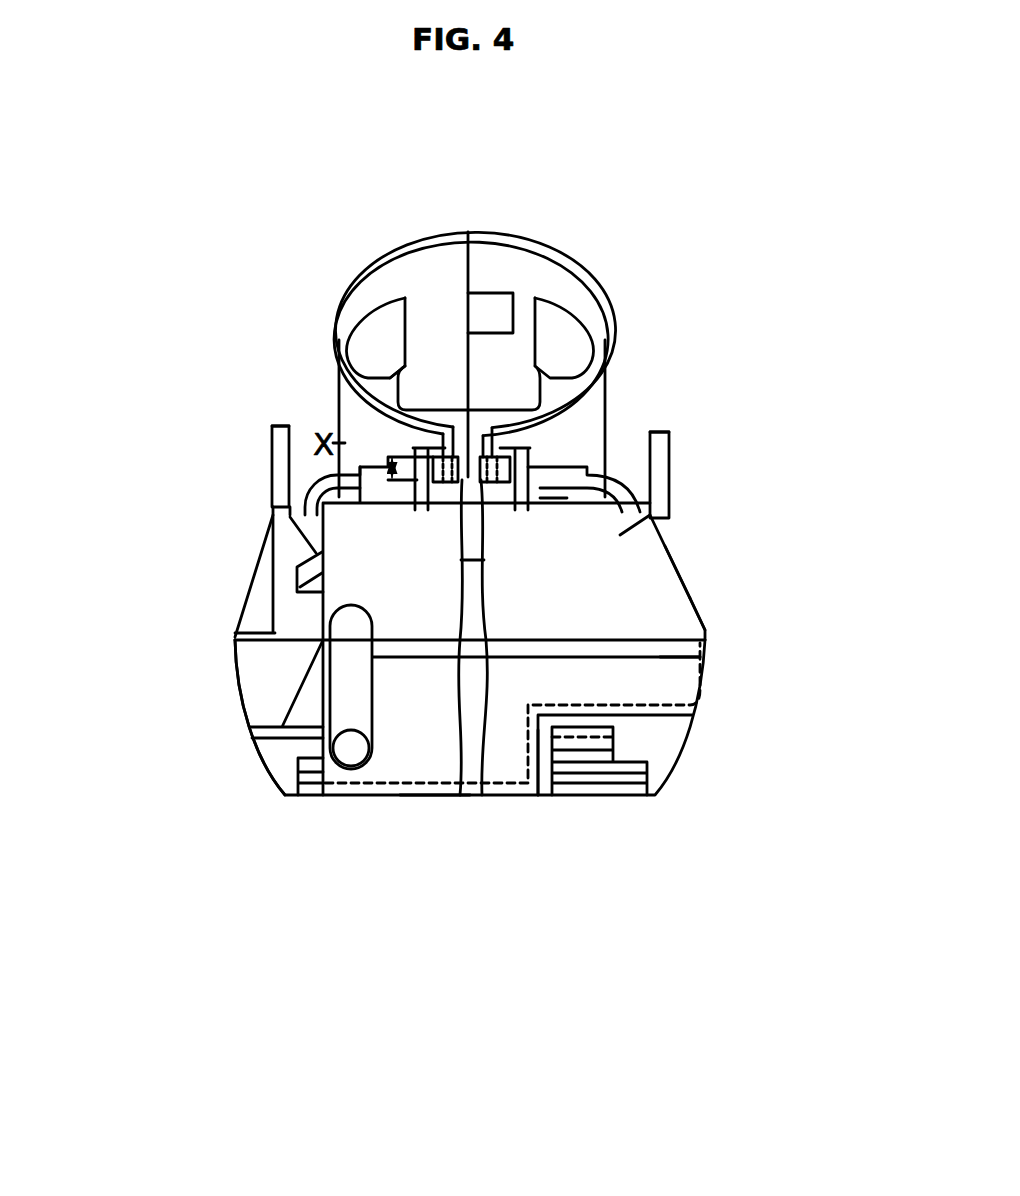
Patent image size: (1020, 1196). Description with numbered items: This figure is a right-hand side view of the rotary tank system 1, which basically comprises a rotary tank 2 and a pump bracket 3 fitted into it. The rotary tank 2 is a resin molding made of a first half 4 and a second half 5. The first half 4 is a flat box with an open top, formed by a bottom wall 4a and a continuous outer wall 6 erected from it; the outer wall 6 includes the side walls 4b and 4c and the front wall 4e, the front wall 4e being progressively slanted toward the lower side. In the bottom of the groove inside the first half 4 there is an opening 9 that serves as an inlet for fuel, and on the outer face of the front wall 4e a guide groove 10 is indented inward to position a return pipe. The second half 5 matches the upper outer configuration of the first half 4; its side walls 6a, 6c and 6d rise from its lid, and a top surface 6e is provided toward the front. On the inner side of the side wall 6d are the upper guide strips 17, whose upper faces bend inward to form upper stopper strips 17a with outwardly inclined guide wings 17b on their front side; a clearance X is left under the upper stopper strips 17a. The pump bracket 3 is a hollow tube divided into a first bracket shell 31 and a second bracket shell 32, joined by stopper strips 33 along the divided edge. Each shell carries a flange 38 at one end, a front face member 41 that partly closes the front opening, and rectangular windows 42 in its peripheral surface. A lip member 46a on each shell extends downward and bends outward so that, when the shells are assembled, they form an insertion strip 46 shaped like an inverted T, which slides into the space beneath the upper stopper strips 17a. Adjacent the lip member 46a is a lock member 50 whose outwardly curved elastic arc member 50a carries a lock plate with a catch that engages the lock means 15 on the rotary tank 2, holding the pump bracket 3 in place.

The rotary tank system 1 is at (705, 246).
The rotary tank 2 is at (702, 617).
The pump bracket 3 is at (616, 329).
The first half 4 is at (692, 738).
The bottom wall 4a is at (431, 778).
The side wall 4b is at (237, 700).
The side wall 4c is at (705, 687).
The front wall 4e is at (513, 770).
The second half 5 is at (679, 567).
The outer wall 6 is at (702, 704).
The side wall 6a is at (252, 580).
The side wall 6c is at (685, 590).
The side wall 6d is at (630, 553).
The top surface 6e is at (566, 496).
The opening 9 is at (350, 753).
The guide groove 10 is at (362, 703).
The lock means 15 is at (310, 570).
The upper guide strips 17 is at (527, 452).
The upper stopper strips 17a is at (395, 453).
The guide wings 17b is at (420, 515).
The first bracket shell 31 is at (415, 277).
The second bracket shell 32 is at (533, 277).
The stopper strips 33 is at (493, 313).
The flange 38 is at (598, 282).
The front face member 41 is at (382, 388).
The rectangular window 42 is at (377, 340).
The insertion strip 46 is at (568, 905).
The lip member 46a is at (482, 795).
The lock member 50 is at (270, 453).
The elastic arc member 50a is at (320, 495).